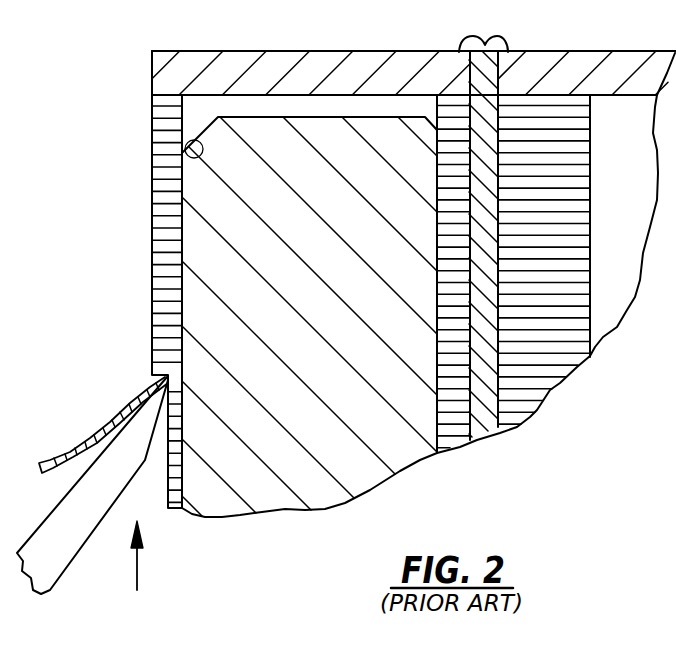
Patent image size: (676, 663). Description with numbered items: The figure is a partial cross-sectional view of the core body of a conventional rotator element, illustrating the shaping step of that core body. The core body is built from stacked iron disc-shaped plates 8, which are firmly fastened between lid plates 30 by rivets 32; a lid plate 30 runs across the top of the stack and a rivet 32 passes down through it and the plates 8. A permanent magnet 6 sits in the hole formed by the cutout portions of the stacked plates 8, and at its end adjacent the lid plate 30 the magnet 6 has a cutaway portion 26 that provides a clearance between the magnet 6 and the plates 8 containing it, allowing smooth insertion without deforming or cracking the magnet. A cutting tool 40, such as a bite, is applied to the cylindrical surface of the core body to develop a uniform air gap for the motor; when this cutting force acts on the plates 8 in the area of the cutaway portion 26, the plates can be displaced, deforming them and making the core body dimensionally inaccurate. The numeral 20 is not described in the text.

The permanent magnet 6 is at (390, 450).
The disc-shaped plate 8 is at (530, 393).
The base body 20 is at (623, 113).
The cutaway portion 26 is at (185, 150).
The lid plate 30 is at (298, 52).
The rivet 32 is at (500, 70).
The cutting tool 40 is at (45, 574).